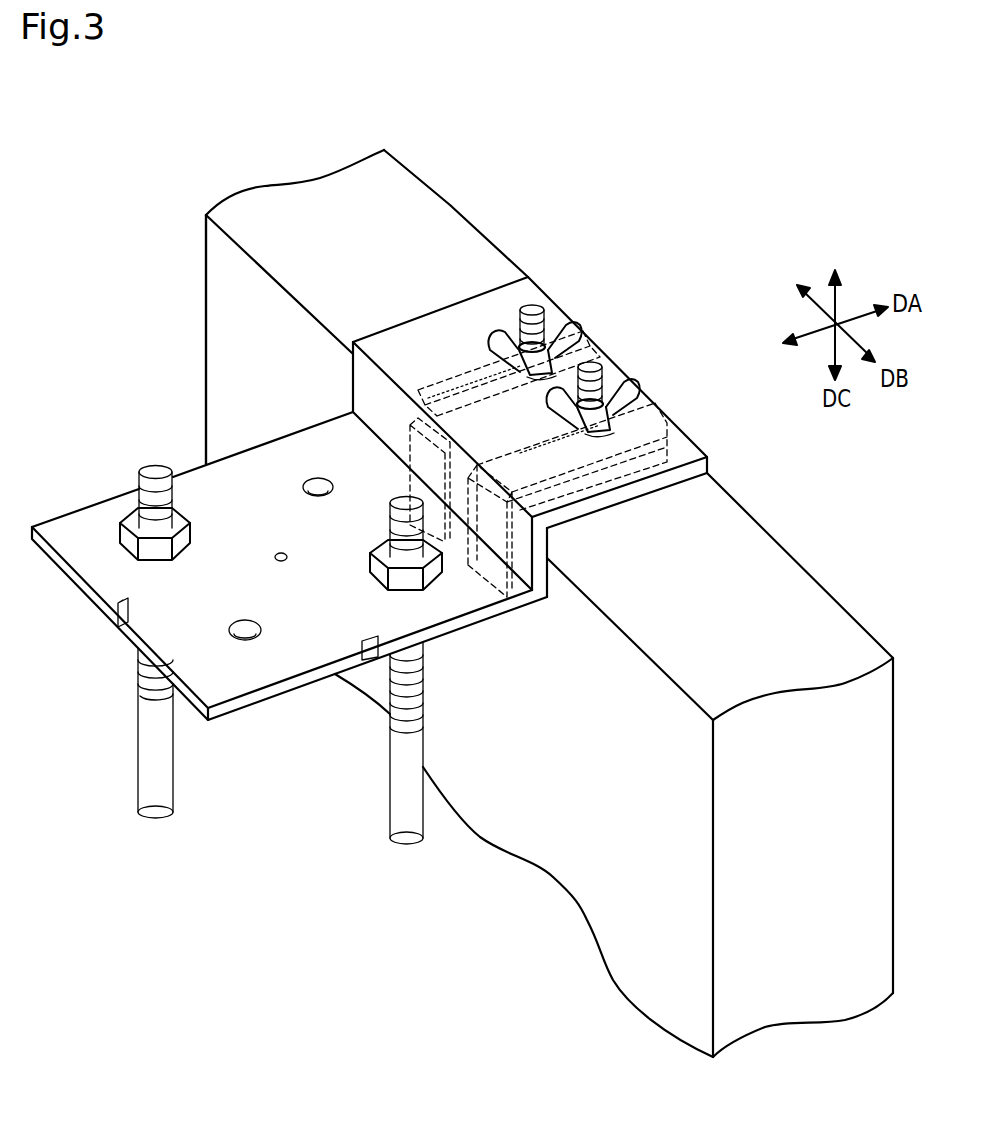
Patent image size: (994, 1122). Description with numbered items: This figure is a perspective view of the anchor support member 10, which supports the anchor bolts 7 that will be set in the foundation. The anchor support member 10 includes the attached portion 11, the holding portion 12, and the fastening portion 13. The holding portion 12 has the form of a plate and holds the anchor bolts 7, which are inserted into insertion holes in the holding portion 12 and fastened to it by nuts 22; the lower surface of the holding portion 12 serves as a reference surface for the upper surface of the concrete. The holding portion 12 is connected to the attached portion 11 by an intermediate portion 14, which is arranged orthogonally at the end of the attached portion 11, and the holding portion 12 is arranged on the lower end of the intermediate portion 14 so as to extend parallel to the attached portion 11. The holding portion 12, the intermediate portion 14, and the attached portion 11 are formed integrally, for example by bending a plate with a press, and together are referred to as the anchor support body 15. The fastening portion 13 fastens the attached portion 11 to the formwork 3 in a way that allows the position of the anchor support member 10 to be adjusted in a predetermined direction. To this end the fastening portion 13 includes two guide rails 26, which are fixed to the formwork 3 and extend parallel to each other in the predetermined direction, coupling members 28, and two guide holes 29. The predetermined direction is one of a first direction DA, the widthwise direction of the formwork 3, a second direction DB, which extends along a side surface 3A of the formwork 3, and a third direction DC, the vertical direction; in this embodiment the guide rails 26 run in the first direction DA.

The formwork 3 is at (206, 259).
The side surface of the formwork 3A is at (206, 309).
The anchor bolt 7 is at (138, 782).
The anchor support member 10 is at (386, 454).
The attached portion 11 is at (386, 454).
The holding portion 12 is at (80, 524).
The fastening portion 13 is at (546, 358).
The intermediate portion 14 is at (362, 388).
The anchor support body 15 is at (693, 437).
The nut 22 is at (124, 543).
The guide rail 26 is at (438, 382).
The coupling member 28 is at (550, 317).
The guide hole 29 is at (587, 348).